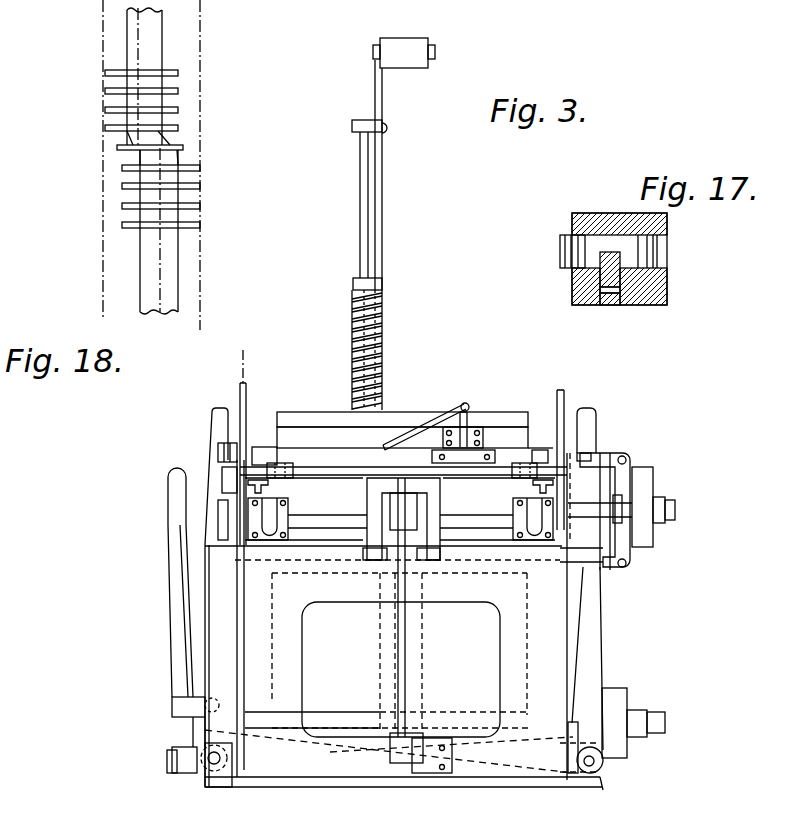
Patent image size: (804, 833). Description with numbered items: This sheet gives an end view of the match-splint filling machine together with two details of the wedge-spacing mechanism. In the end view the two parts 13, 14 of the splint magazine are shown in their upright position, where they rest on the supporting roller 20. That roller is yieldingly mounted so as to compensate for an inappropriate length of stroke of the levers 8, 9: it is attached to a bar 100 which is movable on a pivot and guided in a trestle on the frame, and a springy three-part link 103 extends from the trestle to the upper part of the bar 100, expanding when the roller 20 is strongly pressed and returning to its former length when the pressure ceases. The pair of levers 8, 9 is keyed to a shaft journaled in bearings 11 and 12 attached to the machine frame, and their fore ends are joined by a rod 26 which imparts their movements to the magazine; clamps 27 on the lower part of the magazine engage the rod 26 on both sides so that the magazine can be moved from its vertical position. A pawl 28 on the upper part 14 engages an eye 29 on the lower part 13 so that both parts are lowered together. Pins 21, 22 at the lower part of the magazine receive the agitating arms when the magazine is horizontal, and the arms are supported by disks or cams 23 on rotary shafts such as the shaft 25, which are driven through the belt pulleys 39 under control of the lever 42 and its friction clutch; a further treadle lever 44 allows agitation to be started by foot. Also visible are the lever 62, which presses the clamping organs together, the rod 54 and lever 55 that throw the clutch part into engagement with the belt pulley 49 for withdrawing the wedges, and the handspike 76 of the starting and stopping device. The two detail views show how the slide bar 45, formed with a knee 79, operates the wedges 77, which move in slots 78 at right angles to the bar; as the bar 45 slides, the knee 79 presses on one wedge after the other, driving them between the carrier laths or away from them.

In FIG. 3, the lever 8 is at (562, 442).
In FIG. 3, the lever 9 is at (242, 446).
In FIG. 3, the bearing 11 is at (587, 407).
In FIG. 3, the bearing 12 is at (215, 407).
In FIG. 3, the lower part of the splint magazine 13 is at (312, 452).
In FIG. 3, the upper part of the splint magazine 14 is at (287, 428).
In FIG. 3, the supporting roller 20 is at (418, 68).
In FIG. 3, the pin 21 is at (588, 454).
In FIG. 3, the pin 22 is at (218, 446).
In FIG. 3, the disks or cams 23 is at (245, 547).
In FIG. 3, the rotary shaft 25 is at (307, 502).
In FIG. 3, the rod 26 is at (352, 472).
In FIG. 3, the clamps 27 is at (276, 464).
In FIG. 3, the pawl 28 is at (470, 418).
In FIG. 3, the eye 29 is at (478, 452).
In FIG. 3, the belt pulleys 39 is at (627, 580).
In FIG. 3, the lever 42 is at (598, 657).
In FIG. 3, the lever 44 is at (480, 767).
In FIG. 18, the slide bar 45 is at (178, 271).
In FIG. 17, the slide bar 45 is at (605, 270).
In FIG. 3, the belt pulley 49 is at (650, 470).
In FIG. 3, the rod 54 is at (593, 565).
In FIG. 3, the lever 55 is at (630, 560).
In FIG. 3, the lever 62 is at (405, 653).
In FIG. 3, the lever or handspike 76 is at (176, 643).
In FIG. 18, the wedges 77 is at (126, 167).
In FIG. 17, the wedges 77 is at (565, 255).
In FIG. 17, the slots 78 is at (658, 256).
In FIG. 18, the knee 79 is at (167, 147).
In FIG. 3, the bar 100 is at (375, 93).
In FIG. 3, the springy three-part link 103 is at (360, 181).